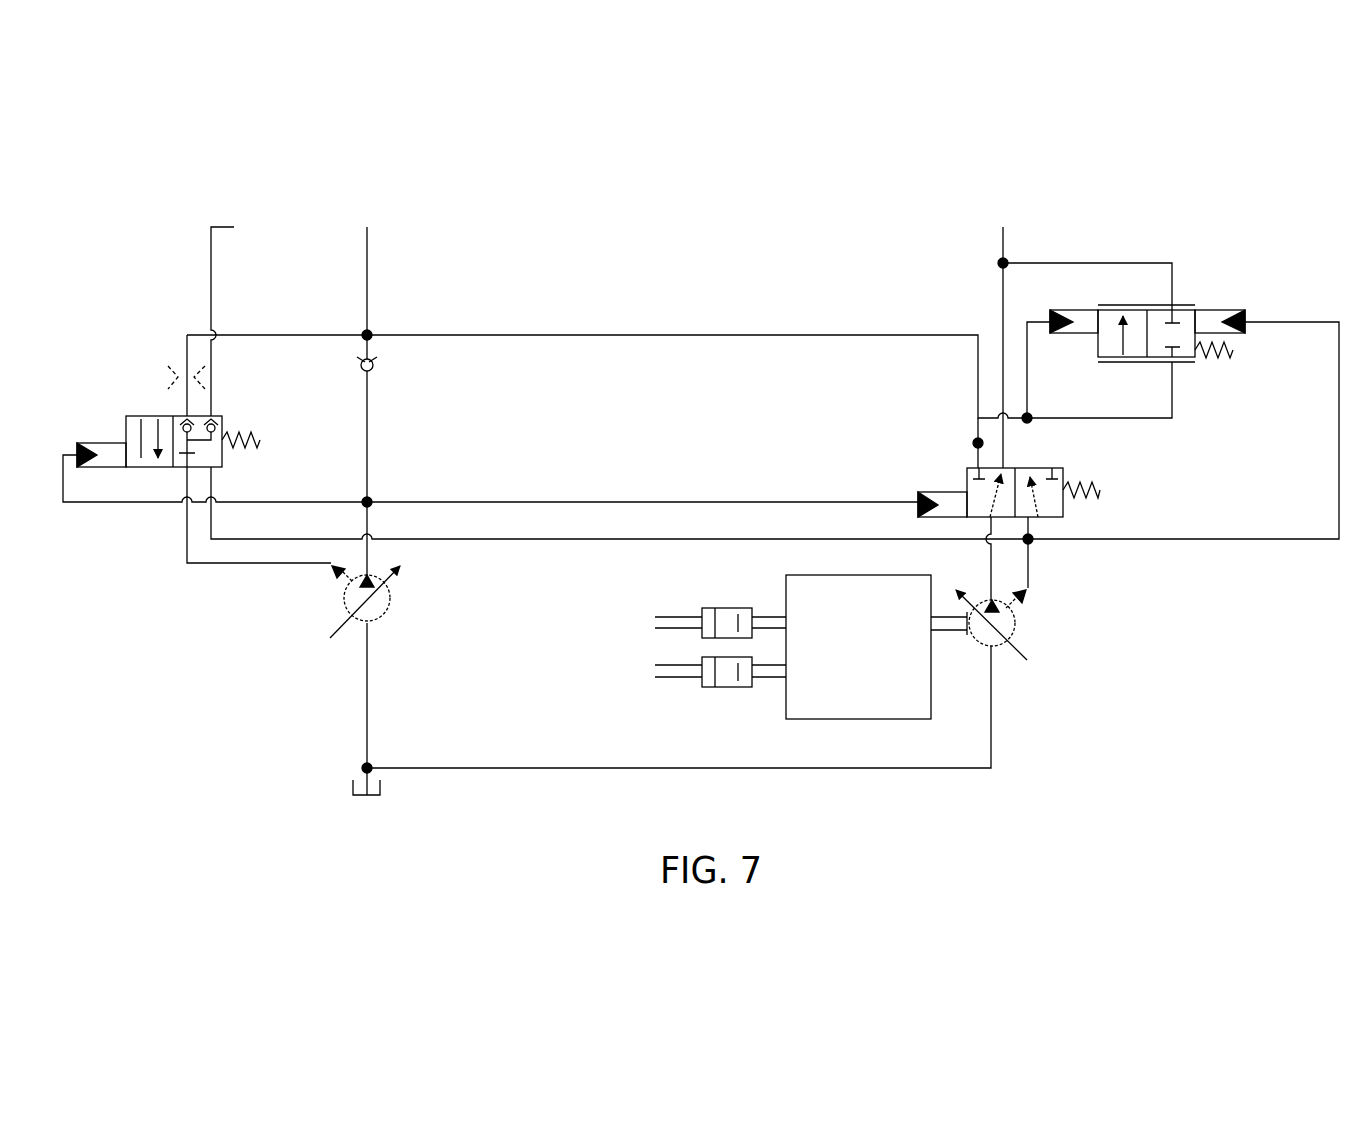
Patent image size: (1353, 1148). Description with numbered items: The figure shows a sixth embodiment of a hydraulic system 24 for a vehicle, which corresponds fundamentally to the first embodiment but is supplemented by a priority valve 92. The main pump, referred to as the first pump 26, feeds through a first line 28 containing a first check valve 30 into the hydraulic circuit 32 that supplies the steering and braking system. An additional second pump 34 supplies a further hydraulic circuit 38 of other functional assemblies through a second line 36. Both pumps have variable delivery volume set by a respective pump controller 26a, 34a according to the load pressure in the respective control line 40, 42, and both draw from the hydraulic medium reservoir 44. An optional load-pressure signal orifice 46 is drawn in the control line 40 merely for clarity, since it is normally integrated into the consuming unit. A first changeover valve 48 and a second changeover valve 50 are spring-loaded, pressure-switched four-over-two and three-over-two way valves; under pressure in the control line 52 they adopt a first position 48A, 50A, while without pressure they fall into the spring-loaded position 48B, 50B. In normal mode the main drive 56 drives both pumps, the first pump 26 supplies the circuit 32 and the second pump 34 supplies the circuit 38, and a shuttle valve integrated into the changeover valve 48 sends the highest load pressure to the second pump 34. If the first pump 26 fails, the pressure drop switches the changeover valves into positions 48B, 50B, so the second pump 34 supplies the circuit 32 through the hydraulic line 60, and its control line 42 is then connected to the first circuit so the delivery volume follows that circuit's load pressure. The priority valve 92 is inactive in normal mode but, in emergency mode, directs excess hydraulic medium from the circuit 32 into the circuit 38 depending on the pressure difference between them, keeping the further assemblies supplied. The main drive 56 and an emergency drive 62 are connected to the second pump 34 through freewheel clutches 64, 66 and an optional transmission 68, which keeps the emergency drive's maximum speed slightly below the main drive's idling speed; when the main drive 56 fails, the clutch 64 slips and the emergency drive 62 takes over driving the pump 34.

The hydraulic system 24 is at (766, 164).
The first pump 26 is at (331, 628).
The pump controller 26a is at (347, 584).
The first line 28 is at (367, 452).
The first check valve 30 is at (375, 367).
The hydraulic circuit 32 is at (367, 272).
The second pump 34 is at (1031, 658).
The pump controller 34a is at (1019, 604).
The second line 36 is at (1003, 443).
The hydraulic circuit 38 is at (1003, 232).
The control line 40 is at (205, 565).
The control line 42 is at (1028, 560).
The hydraulic medium reservoir 44 is at (353, 790).
The load-pressure signal orifice 46 is at (172, 378).
The first changeover valve 48 is at (208, 405).
The first position 48A is at (225, 396).
The spring-loaded position 48B is at (266, 413).
The second changeover valve 50 is at (1032, 472).
The first position 50A is at (953, 468).
The spring-loaded position 50B is at (1091, 465).
The control line 52 is at (120, 505).
The main drive 56 is at (672, 623).
The hydraulic line 60 is at (978, 404).
The emergency drive 62 is at (672, 672).
The clutch 64 is at (735, 607).
The clutch 66 is at (735, 688).
The transmission 68 is at (880, 656).
The priority valve 92 is at (1191, 279).